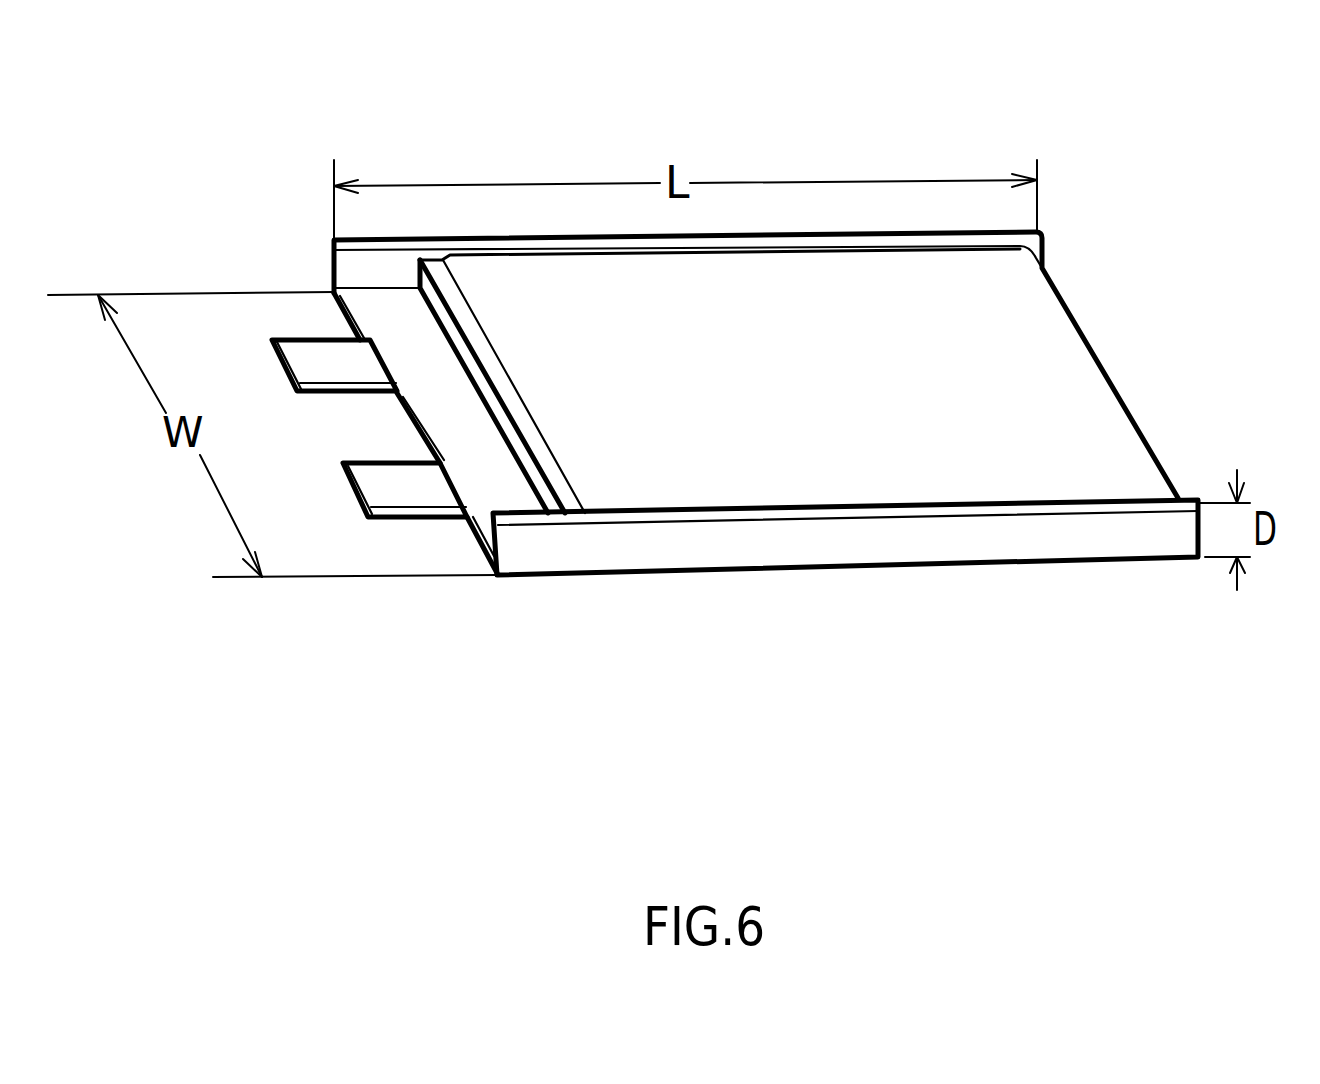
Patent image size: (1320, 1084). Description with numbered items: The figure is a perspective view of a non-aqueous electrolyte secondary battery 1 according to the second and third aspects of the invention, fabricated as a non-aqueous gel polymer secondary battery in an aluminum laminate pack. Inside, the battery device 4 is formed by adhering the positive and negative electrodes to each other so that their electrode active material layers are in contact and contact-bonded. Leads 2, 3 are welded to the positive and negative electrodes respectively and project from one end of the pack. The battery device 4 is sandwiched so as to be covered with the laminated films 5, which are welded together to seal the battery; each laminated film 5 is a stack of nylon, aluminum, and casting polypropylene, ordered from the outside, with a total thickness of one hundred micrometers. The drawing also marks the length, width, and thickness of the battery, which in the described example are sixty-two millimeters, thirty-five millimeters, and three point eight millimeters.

The non-aqueous electrolyte secondary battery 1 is at (1150, 235).
The lead 2 is at (325, 360).
The lead 3 is at (396, 489).
The battery device 4 is at (1068, 385).
The laminated film 5 is at (745, 548).